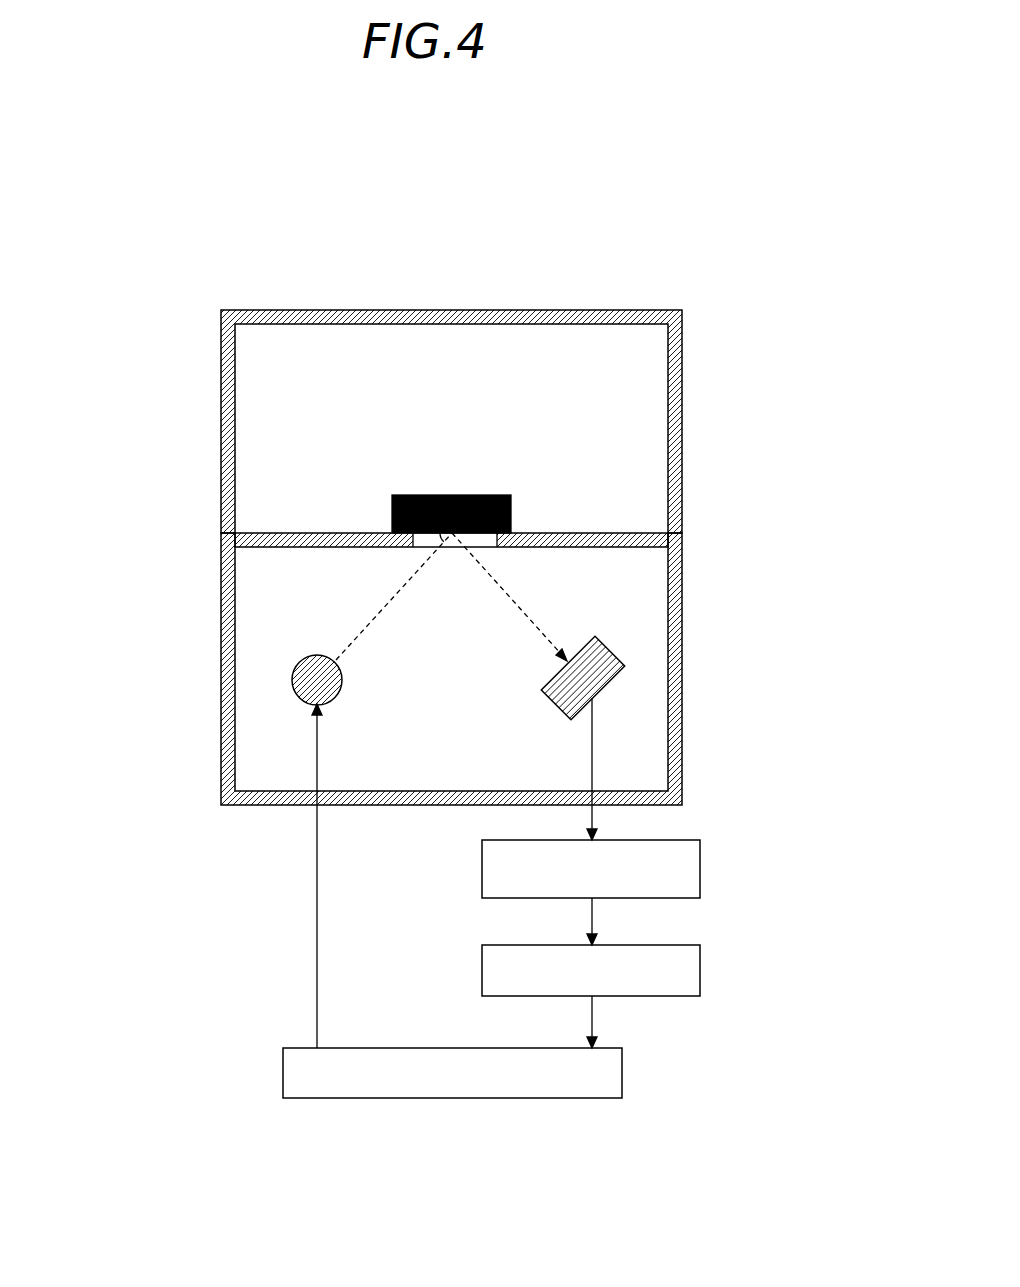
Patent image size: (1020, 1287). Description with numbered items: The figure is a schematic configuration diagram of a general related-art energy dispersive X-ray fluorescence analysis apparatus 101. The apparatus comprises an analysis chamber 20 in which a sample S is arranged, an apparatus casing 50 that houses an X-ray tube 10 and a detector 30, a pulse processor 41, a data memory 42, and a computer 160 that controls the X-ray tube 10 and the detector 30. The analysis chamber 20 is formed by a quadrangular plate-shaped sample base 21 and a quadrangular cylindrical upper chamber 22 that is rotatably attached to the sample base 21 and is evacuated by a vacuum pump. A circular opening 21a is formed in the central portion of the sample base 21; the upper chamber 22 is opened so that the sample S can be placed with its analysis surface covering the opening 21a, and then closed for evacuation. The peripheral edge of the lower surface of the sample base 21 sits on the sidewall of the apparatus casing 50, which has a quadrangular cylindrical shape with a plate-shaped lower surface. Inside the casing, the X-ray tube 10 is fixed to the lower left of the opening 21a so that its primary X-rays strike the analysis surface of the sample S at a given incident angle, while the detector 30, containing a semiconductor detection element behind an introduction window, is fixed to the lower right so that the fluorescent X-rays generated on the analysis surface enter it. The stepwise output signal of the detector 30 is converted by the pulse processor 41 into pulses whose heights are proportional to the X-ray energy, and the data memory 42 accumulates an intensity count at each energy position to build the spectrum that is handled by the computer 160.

The energy dispersive X-ray fluorescence analysis apparatus 101 is at (461, 258).
The analysis chamber 20 is at (132, 335).
The upper chamber 22 is at (230, 352).
The sample base 21 is at (282, 532).
The opening 21a is at (410, 540).
The apparatus casing 50 is at (684, 737).
The sample S is at (455, 495).
The X-ray tube 10 is at (292, 680).
The detector 30 is at (597, 637).
The pulse processor 41 is at (703, 862).
The data memory 42 is at (703, 966).
The computer 160 is at (622, 1070).